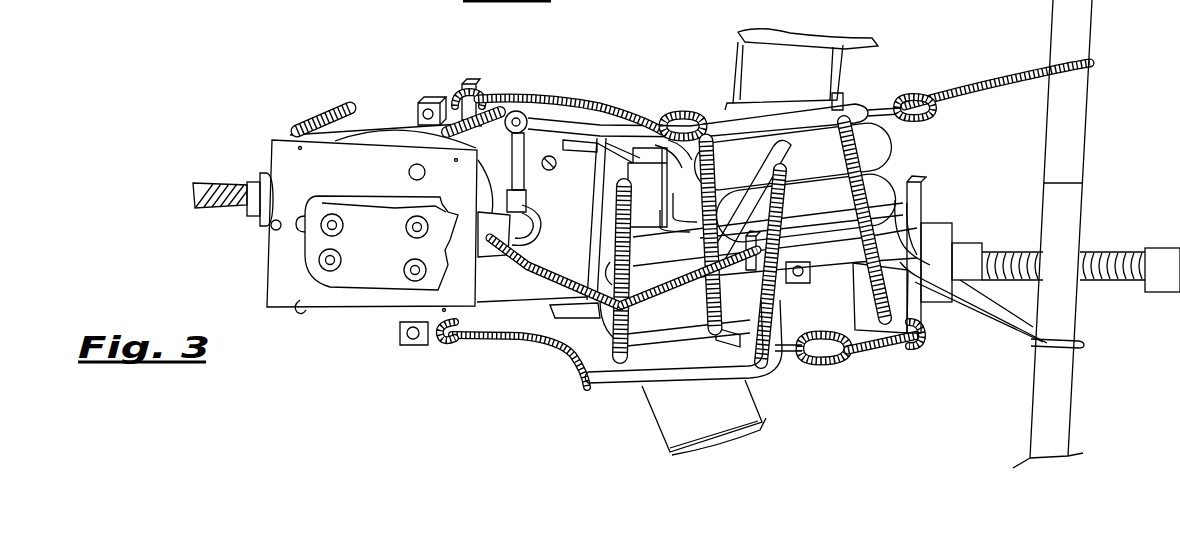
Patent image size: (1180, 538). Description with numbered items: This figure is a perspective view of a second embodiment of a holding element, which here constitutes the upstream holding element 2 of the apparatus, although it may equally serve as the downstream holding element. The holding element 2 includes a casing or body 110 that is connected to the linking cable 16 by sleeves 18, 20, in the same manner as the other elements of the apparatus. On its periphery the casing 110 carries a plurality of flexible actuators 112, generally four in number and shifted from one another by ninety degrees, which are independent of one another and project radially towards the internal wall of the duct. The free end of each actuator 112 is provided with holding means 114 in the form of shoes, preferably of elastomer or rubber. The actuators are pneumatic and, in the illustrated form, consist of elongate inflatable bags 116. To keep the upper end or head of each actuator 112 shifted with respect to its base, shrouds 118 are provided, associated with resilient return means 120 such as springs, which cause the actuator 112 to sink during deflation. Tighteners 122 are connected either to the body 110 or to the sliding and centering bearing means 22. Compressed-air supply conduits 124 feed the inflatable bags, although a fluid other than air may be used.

The upstream holding element 2 is at (762, 441).
The linking cable 16 is at (1090, 288).
The sleeve 18 is at (965, 248).
The sleeve 20 is at (252, 222).
The sliding and centering bearing means 22 is at (1068, 388).
The casing or body 110 is at (512, 293).
The flexible actuator 112 is at (389, 138).
The holding means 114 is at (318, 242).
The elongate inflatable bag 116 is at (868, 152).
The shroud 118 is at (278, 164).
The resilient return means 120 is at (347, 108).
The tightener 122 is at (955, 92).
The compressed-air supply conduit 124 is at (528, 220).